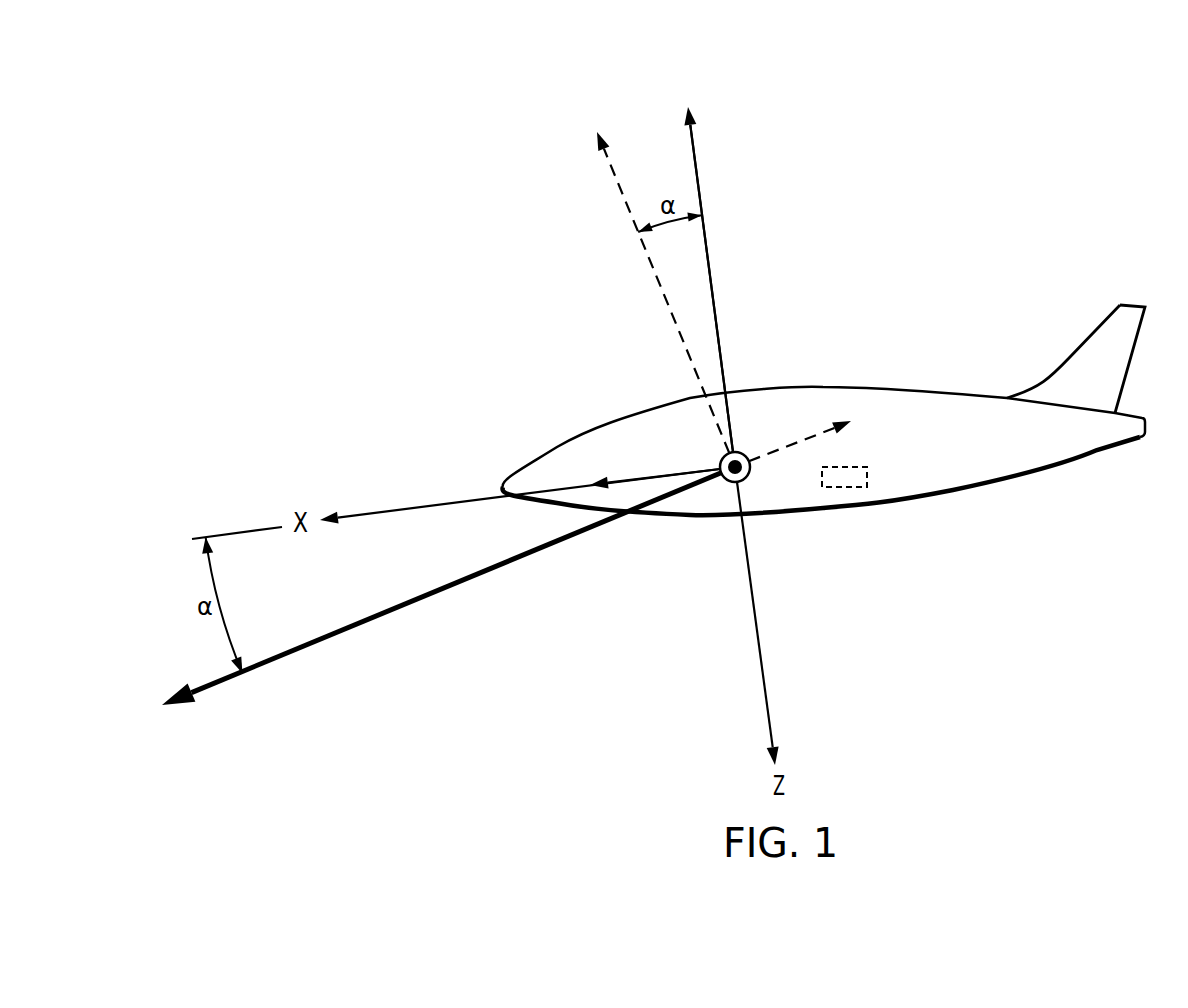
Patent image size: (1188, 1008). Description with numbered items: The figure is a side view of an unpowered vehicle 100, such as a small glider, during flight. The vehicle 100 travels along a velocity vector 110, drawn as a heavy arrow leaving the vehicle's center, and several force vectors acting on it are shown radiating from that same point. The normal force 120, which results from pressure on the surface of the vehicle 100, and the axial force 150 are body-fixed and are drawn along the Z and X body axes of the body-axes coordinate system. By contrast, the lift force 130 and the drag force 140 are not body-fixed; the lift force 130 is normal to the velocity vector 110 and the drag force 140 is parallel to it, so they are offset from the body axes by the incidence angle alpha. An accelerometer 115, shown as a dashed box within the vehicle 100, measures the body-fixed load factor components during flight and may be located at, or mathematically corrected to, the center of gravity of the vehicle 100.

The unpowered vehicle 100 is at (925, 387).
The velocity vector 110 is at (312, 644).
The accelerometer 115 is at (852, 488).
The normal force 120 is at (698, 162).
The lift force 130 is at (613, 172).
The drag force 140 is at (779, 450).
The axial force 150 is at (652, 473).